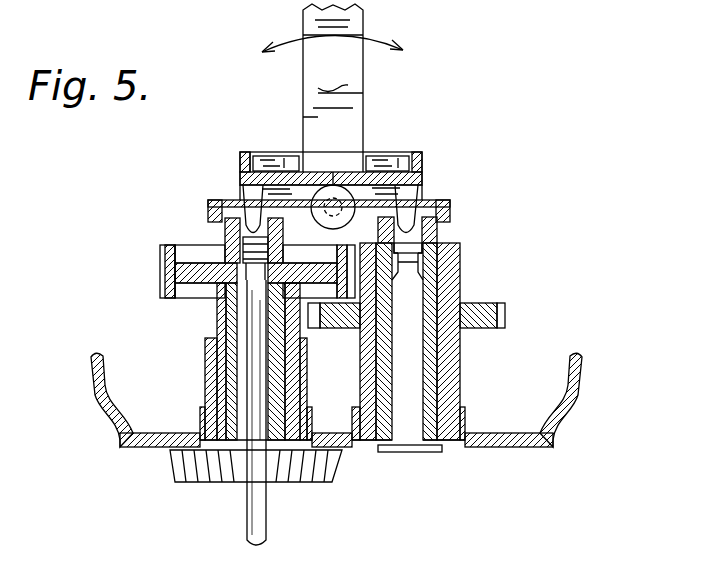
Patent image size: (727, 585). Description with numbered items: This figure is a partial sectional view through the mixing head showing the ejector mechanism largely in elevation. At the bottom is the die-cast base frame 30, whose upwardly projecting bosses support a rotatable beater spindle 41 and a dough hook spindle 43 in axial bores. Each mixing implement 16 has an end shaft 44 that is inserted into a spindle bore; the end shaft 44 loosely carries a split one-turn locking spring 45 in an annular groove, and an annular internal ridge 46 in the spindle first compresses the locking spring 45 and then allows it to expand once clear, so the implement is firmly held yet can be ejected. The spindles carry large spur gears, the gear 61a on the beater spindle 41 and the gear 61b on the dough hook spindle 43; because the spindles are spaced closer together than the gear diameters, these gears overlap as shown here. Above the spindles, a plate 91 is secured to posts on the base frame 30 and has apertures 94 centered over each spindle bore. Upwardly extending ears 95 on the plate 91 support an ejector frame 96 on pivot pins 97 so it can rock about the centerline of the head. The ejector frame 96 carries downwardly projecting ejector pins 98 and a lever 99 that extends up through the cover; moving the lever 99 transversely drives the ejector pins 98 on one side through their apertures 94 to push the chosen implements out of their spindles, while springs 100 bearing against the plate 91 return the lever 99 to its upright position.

The mixing implement 16 is at (253, 512).
The base frame 30 is at (580, 374).
The beater spindle 41 is at (521, 290).
The dough hook spindle 43 is at (139, 256).
The end shaft 44 is at (245, 362).
The locking spring 45 is at (242, 250).
The annular internal ridge 46 is at (240, 262).
The spur gear 61a is at (507, 315).
The spur gear 61b is at (160, 273).
The plate 91 is at (450, 200).
The aperture 94 is at (238, 203).
The ear 95 is at (369, 140).
The ejector frame 96 is at (240, 152).
The pin 97 is at (330, 193).
The ejector pin 98 is at (252, 194).
The lever 99 is at (333, 84).
The spring 100 is at (288, 187).